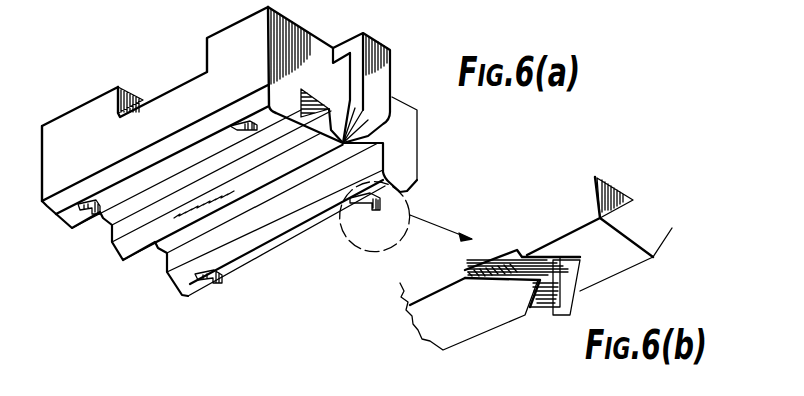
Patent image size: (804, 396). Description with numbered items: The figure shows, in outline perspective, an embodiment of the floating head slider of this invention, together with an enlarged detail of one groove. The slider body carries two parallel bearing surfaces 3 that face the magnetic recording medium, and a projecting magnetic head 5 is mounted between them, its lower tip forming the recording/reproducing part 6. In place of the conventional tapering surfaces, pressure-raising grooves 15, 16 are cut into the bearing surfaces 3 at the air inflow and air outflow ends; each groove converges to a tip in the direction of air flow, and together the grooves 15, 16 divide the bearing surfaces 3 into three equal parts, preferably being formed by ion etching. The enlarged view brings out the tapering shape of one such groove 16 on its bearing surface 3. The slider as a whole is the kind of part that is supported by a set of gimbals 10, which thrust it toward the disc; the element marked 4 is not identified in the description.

In FIG. 6A, the gimbals 10 is at (106, 97).
In FIG. 6A, the bearing surface 3 is at (183, 160).
In FIG. 6B, the bearing surface 3 is at (620, 253).
In FIG. 6A, the end block 4 is at (317, 55).
In FIG. 6A, the magnetic head 5 is at (383, 61).
In FIG. 6A, the recording/reproducing part 6 is at (383, 142).
In FIG. 6A, the pressure-raising groove 15 is at (93, 208).
In FIG. 6A, the pressure-raising groove 16 is at (250, 125).
In FIG. 6B, the pressure-raising groove 16 is at (562, 273).